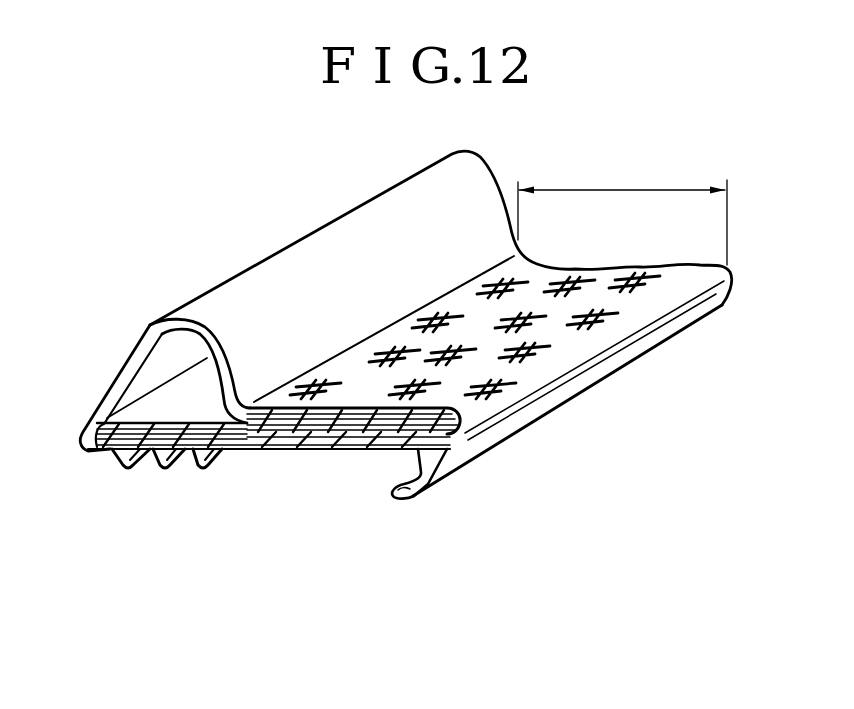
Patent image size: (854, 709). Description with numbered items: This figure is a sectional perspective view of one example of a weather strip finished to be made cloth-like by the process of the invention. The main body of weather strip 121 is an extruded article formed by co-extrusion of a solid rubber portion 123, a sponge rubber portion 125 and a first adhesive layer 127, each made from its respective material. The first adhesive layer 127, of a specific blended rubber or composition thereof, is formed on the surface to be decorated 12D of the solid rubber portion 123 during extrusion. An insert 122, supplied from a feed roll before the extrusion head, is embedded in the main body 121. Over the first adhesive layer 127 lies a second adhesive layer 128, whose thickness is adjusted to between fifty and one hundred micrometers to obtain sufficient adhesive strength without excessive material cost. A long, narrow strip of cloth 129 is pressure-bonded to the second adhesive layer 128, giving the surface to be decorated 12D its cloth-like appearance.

The main body of weather strip 121 is at (250, 258).
The sponge rubber portion 125 is at (143, 338).
The first adhesive layer 127 is at (322, 452).
The insert 122 is at (281, 452).
The solid rubber portion 123 is at (241, 452).
The second adhesive layer 128 is at (367, 452).
The cloth 129 is at (642, 308).
The surface to be decorated 12D is at (622, 214).